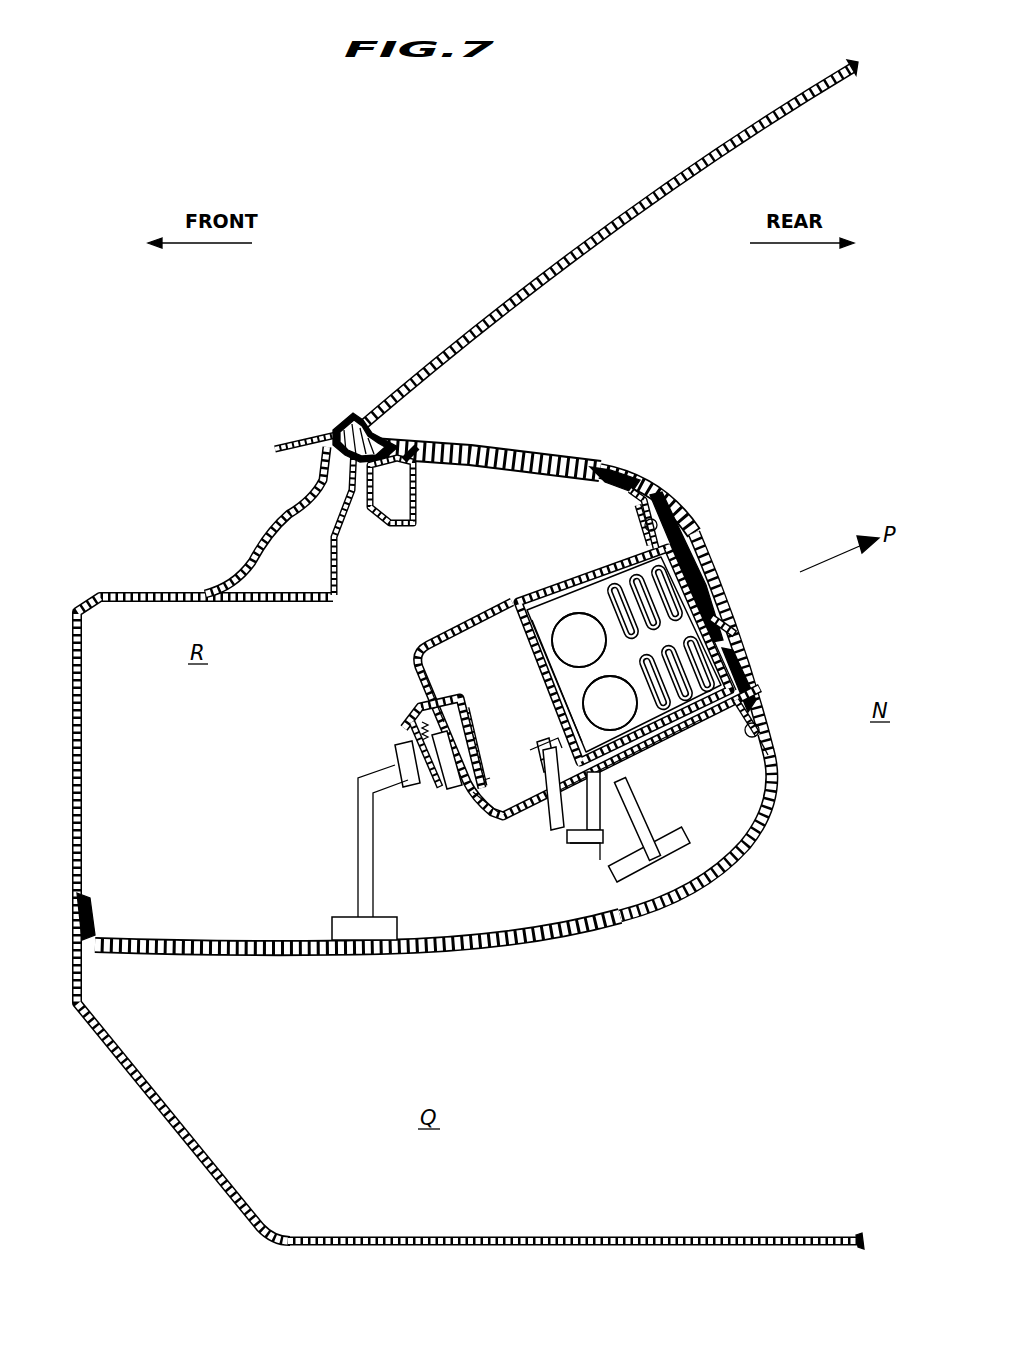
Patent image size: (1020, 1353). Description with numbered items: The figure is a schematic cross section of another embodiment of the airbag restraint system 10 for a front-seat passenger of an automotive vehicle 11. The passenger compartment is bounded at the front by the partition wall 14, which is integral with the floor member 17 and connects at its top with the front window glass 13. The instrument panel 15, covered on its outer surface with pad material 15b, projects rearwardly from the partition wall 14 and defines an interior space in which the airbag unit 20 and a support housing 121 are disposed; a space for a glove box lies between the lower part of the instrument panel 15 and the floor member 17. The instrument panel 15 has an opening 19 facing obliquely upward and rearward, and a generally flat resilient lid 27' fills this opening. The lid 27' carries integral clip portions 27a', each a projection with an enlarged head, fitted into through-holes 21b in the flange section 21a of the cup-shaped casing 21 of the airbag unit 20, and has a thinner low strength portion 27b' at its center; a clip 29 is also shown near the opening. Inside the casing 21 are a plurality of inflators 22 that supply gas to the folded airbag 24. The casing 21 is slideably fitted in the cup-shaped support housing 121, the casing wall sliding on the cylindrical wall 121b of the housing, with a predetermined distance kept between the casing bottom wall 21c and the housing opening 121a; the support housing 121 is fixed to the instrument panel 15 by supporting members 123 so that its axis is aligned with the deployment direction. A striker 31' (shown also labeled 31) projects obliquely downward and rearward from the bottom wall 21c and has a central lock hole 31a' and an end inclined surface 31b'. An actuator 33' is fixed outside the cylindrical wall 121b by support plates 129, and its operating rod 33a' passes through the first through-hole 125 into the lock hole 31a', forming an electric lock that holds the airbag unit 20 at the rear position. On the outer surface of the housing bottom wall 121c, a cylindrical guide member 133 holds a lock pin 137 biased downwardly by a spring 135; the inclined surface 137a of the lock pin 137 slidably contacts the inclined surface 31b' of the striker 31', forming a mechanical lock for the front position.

The airbag restraint system 10 is at (766, 402).
The automotive vehicle 11 is at (483, 276).
The front windshield or window glass 13 is at (668, 179).
The partition wall 14 is at (75, 989).
The instrument panel 15 is at (690, 880).
The pad material 15b is at (728, 852).
The floor member 17 is at (594, 1235).
The opening 19 is at (767, 745).
The airbag unit 20 is at (586, 575).
The casing 21 is at (558, 591).
The flange section 21a is at (650, 497).
The through-holes 21b is at (649, 524).
The bottom wall 21c is at (520, 657).
The inflators 22 is at (560, 630).
The airbag 24 is at (701, 665).
The lid 27' is at (754, 623).
The clip portions 27a' is at (676, 630).
The low strength portion 27b' is at (740, 585).
The clip 29 is at (607, 801).
The screw 31 is at (470, 737).
The striker 31' is at (501, 784).
The lock hole 31a' is at (521, 742).
The inclined surface 31b' is at (523, 764).
The actuator 33' is at (589, 869).
The operating rod 33a' is at (530, 723).
The support housing 121 is at (433, 647).
The opening 121a is at (648, 753).
The cylindrical wall 121b is at (476, 806).
The bottom wall 121c is at (420, 665).
The supporting members 123 is at (623, 806).
The first through-hole 125 is at (568, 842).
The support plates 129 is at (546, 803).
The cylindrical guide member 133 is at (402, 720).
The spring 135 is at (417, 706).
The lock pin 137 is at (452, 787).
The inclined surface 137a is at (465, 802).